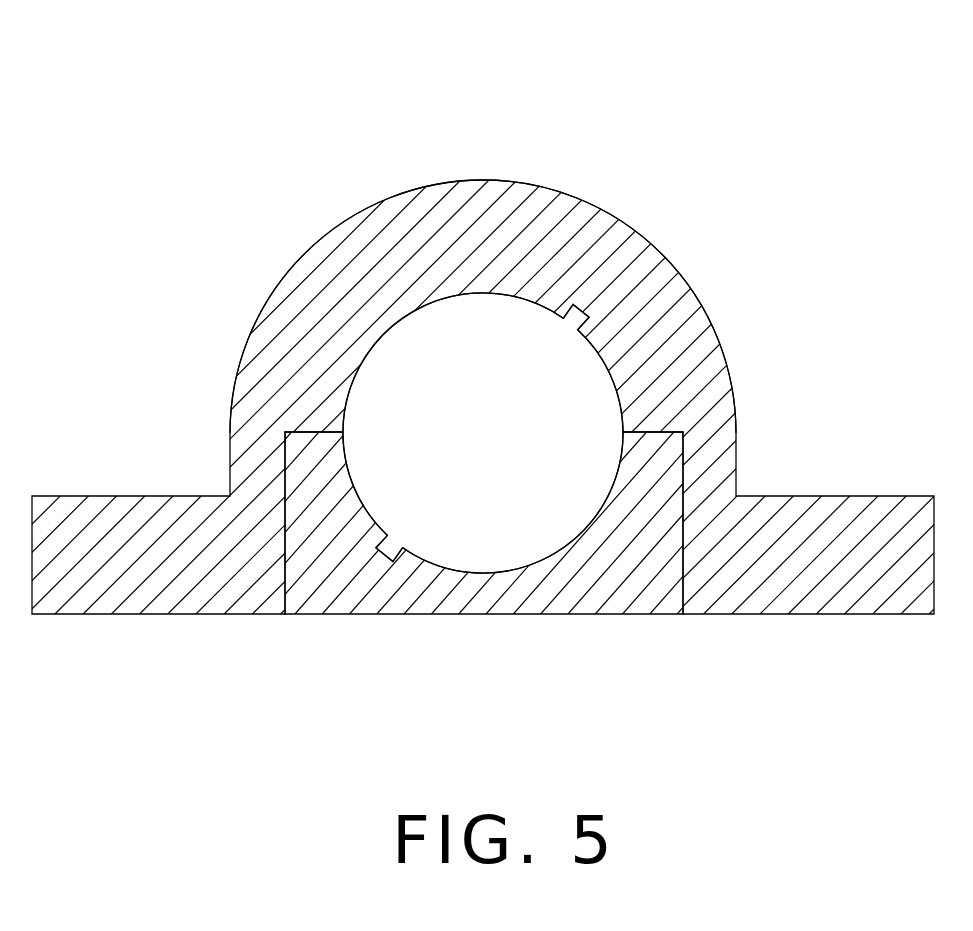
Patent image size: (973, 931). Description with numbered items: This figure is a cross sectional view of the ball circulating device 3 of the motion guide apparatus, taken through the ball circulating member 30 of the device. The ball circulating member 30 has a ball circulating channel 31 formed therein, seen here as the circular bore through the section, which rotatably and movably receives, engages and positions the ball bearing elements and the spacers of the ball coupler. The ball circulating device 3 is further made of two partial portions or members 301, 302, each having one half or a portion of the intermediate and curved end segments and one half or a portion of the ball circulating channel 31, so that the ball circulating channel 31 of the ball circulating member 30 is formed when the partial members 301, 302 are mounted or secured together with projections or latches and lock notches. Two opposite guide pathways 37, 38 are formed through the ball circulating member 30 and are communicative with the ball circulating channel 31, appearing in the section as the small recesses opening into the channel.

The ball circulating device 3 is at (486, 366).
The ball circulating member 30 is at (486, 321).
The partial member 301 is at (300, 258).
The partial member 302 is at (338, 604).
The ball circulating channel 31 is at (539, 522).
The guide pathway 37 is at (390, 552).
The guide pathway 38 is at (580, 316).